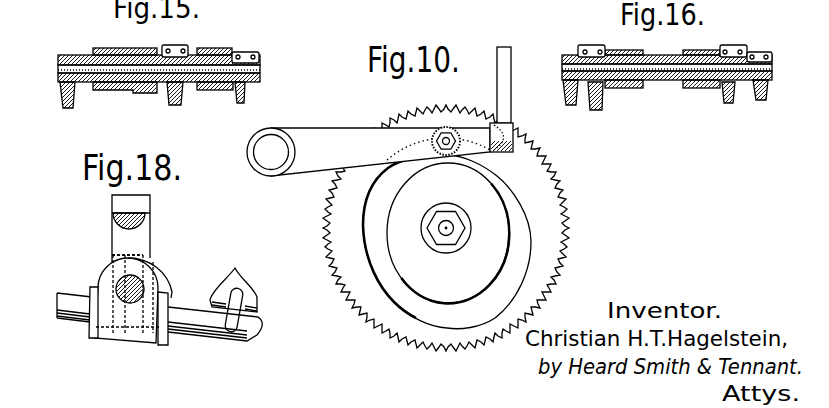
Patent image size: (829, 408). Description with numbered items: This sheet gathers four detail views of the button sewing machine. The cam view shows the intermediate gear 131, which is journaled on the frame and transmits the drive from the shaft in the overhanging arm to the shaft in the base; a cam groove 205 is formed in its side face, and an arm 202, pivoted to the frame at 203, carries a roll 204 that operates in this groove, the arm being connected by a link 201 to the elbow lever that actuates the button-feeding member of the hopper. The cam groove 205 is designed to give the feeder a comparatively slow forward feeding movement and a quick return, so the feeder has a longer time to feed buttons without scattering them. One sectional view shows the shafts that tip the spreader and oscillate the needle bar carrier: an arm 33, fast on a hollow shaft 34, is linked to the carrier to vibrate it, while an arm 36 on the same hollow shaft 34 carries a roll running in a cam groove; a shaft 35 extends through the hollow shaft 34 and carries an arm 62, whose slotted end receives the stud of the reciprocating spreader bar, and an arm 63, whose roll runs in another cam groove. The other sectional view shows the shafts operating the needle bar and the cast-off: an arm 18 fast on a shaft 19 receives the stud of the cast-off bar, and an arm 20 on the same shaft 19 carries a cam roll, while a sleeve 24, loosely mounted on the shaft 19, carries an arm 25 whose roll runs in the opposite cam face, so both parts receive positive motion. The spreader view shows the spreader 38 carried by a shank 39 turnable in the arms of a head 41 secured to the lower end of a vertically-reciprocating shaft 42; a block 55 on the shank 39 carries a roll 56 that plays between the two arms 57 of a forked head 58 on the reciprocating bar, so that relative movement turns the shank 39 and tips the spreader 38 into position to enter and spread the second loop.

In FIG. 15, the shaft 35 is at (82, 67).
In FIG. 15, the hollow shaft 34 is at (193, 55).
In FIG. 15, the arm 62 is at (60, 96).
In FIG. 15, the arm 33 is at (103, 87).
In FIG. 15, the arm 36 is at (182, 93).
In FIG. 15, the arm 63 is at (239, 93).
In FIG. 16, the sleeve 24 is at (662, 58).
In FIG. 16, the arm 18 is at (571, 98).
In FIG. 16, the shaft 19 is at (601, 107).
In FIG. 16, the arm 25 is at (724, 102).
In FIG. 16, the arm 20 is at (766, 98).
In FIG. 18, the forked head 58 is at (143, 208).
In FIG. 18, the arms of forked head 57 is at (132, 232).
In FIG. 18, the roll 56 is at (135, 253).
In FIG. 18, the block 55 is at (157, 257).
In FIG. 18, the vertically-reciprocating shaft 42 is at (117, 282).
In FIG. 18, the head or block 41 is at (103, 322).
In FIG. 18, the spreader 38 is at (242, 285).
In FIG. 18, the shank 39 is at (183, 332).
In FIG. 10, the arm 202 is at (334, 142).
In FIG. 10, the pivot 203 is at (283, 167).
In FIG. 10, the roll 204 is at (444, 127).
In FIG. 10, the link 201 is at (508, 73).
In FIG. 10, the cam groove 205 is at (512, 198).
In FIG. 10, the intermediate gear 131 is at (553, 240).